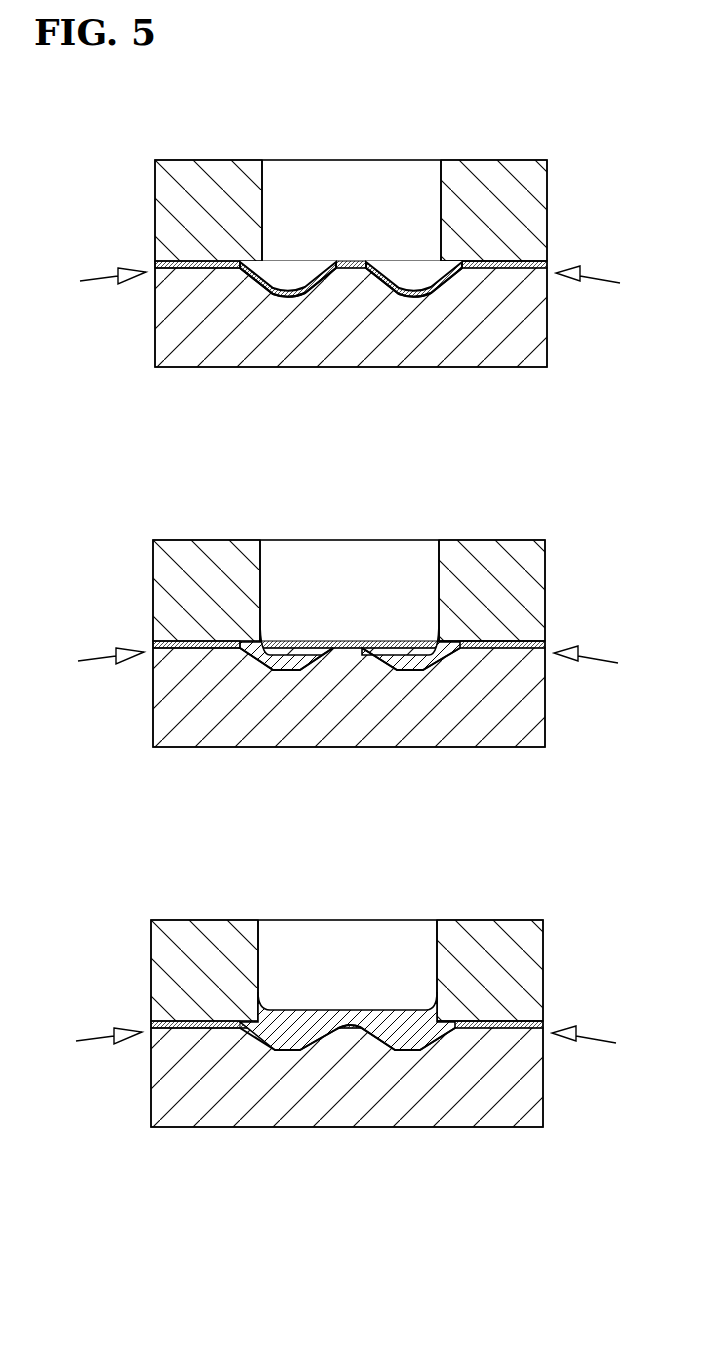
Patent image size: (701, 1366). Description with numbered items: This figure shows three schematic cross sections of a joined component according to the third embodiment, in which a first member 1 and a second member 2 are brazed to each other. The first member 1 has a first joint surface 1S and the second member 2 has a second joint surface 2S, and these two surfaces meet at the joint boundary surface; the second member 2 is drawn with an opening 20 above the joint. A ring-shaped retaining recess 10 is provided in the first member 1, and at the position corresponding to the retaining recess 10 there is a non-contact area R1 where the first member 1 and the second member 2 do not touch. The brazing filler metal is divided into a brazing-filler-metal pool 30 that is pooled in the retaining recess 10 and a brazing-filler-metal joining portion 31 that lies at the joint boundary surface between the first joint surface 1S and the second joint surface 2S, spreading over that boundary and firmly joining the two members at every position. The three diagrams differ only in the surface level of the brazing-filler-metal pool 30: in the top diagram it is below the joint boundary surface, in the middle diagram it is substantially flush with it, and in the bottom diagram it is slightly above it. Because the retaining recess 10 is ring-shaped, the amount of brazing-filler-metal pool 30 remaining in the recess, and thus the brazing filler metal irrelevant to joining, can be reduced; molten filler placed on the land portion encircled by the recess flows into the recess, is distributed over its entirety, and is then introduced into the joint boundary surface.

The first member 1 is at (548, 327).
The first joint surface 1S is at (521, 262).
The second member 2 is at (548, 208).
The second joint surface 2S is at (507, 272).
The recess / groove in second metal member 20 is at (416, 188).
The brazing-filler-metal pool 30 is at (402, 262).
The brazing-filler-metal joining portion 31 is at (180, 260).
The retaining recess 10 is at (372, 282).
The non-contact area R1 is at (464, 258).